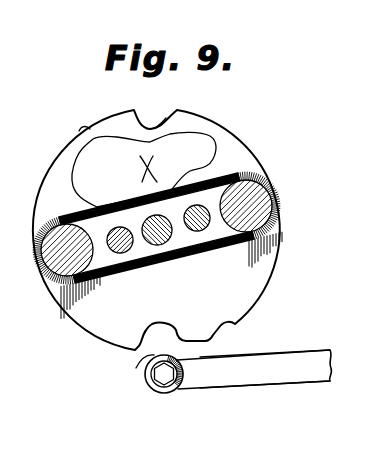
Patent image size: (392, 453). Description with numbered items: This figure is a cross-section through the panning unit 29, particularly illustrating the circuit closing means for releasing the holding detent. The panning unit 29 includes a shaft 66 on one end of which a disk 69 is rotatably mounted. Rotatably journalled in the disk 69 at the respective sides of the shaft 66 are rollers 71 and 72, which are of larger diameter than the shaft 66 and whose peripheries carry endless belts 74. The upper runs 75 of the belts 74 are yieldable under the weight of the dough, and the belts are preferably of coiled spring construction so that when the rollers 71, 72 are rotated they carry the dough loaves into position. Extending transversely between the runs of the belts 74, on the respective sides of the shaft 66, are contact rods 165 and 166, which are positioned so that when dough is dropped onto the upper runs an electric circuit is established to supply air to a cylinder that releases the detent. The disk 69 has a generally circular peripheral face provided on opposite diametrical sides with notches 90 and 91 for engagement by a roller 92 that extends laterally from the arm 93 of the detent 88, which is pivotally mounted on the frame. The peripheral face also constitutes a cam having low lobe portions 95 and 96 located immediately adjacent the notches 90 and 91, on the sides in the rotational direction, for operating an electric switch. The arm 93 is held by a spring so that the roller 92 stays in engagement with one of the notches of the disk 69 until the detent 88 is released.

The low lobe portion 95 is at (103, 121).
The notch 90 is at (196, 113).
The upper runs 75 is at (169, 193).
The endless belts 74 is at (280, 186).
The roller 72 is at (257, 203).
The panning unit 29 is at (281, 221).
The roller 71 is at (47, 264).
The contact rod 165 is at (205, 231).
The shaft 66 is at (162, 246).
The contact rod 166 is at (120, 254).
The disk 69 is at (93, 322).
The notch 91 is at (141, 358).
The roller 92 is at (158, 395).
The low lobe portion 96 is at (211, 341).
The detent 88 is at (303, 350).
The arm 93 is at (257, 377).